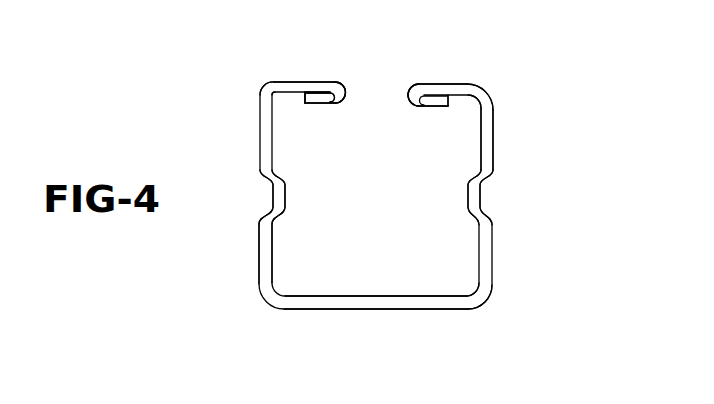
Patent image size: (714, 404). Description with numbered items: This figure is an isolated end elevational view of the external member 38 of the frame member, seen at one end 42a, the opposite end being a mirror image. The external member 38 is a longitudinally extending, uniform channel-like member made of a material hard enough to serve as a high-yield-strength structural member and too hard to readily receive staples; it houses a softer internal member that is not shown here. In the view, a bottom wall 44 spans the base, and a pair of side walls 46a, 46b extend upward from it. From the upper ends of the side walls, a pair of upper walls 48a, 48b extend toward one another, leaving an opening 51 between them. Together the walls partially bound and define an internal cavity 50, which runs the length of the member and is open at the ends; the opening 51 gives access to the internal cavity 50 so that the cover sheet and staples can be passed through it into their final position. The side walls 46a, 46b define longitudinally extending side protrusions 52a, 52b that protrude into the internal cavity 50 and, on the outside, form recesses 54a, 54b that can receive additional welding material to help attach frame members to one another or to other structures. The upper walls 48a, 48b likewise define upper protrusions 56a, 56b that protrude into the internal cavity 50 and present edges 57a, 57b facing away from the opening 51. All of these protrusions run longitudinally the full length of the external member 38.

The external member 38 is at (534, 273).
The end 42a is at (360, 305).
The bottom wall 44 is at (425, 311).
The side wall 46a is at (259, 265).
The side wall 46b is at (494, 159).
The upper wall 48a is at (316, 82).
The upper wall 48b is at (449, 84).
The internal cavity 50 is at (310, 127).
The opening 51 is at (379, 78).
The side protrusion 52a is at (286, 185).
The side protrusion 52b is at (465, 196).
The recess 54a is at (262, 189).
The recess 54b is at (480, 197).
The upper protrusion 56a is at (318, 105).
The upper protrusion 56b is at (439, 108).
The edge 57a is at (264, 102).
The edge 57b is at (483, 100).